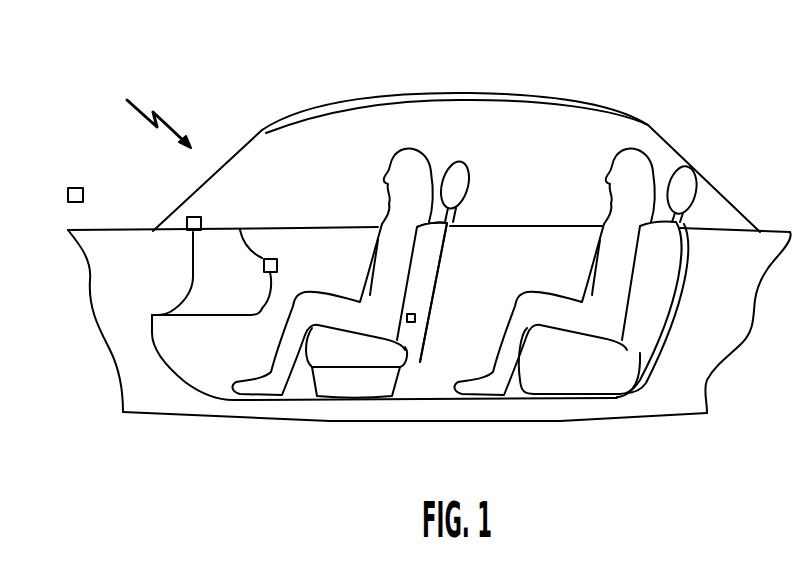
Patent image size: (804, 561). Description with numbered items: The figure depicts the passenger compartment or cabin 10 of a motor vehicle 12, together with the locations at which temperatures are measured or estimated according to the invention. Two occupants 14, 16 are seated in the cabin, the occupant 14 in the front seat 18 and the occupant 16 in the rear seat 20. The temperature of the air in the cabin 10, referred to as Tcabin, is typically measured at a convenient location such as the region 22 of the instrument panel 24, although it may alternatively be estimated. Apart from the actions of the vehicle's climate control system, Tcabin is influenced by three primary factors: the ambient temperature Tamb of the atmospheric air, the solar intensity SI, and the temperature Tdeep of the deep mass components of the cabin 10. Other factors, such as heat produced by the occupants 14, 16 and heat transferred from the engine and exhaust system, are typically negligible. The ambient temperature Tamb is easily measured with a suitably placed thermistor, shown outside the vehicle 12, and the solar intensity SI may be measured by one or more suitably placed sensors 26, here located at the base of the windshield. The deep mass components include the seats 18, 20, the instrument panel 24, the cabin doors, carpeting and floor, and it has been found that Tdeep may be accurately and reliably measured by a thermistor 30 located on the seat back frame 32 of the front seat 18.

The passenger compartment or cabin 10 is at (230, 141).
The motor vehicle 12 is at (103, 258).
The occupant 14 is at (423, 167).
The occupant 16 is at (627, 167).
The front seat 18 is at (333, 385).
The rear seat 20 is at (570, 383).
The region of instrument panel 22 is at (278, 266).
The instrument panel 24 is at (237, 240).
The sensor 26 is at (194, 217).
The thermistor 30 is at (419, 322).
The seat back frame 32 is at (438, 285).
The solar intensity SI is at (135, 103).
The ambient temperature Tamb is at (77, 188).